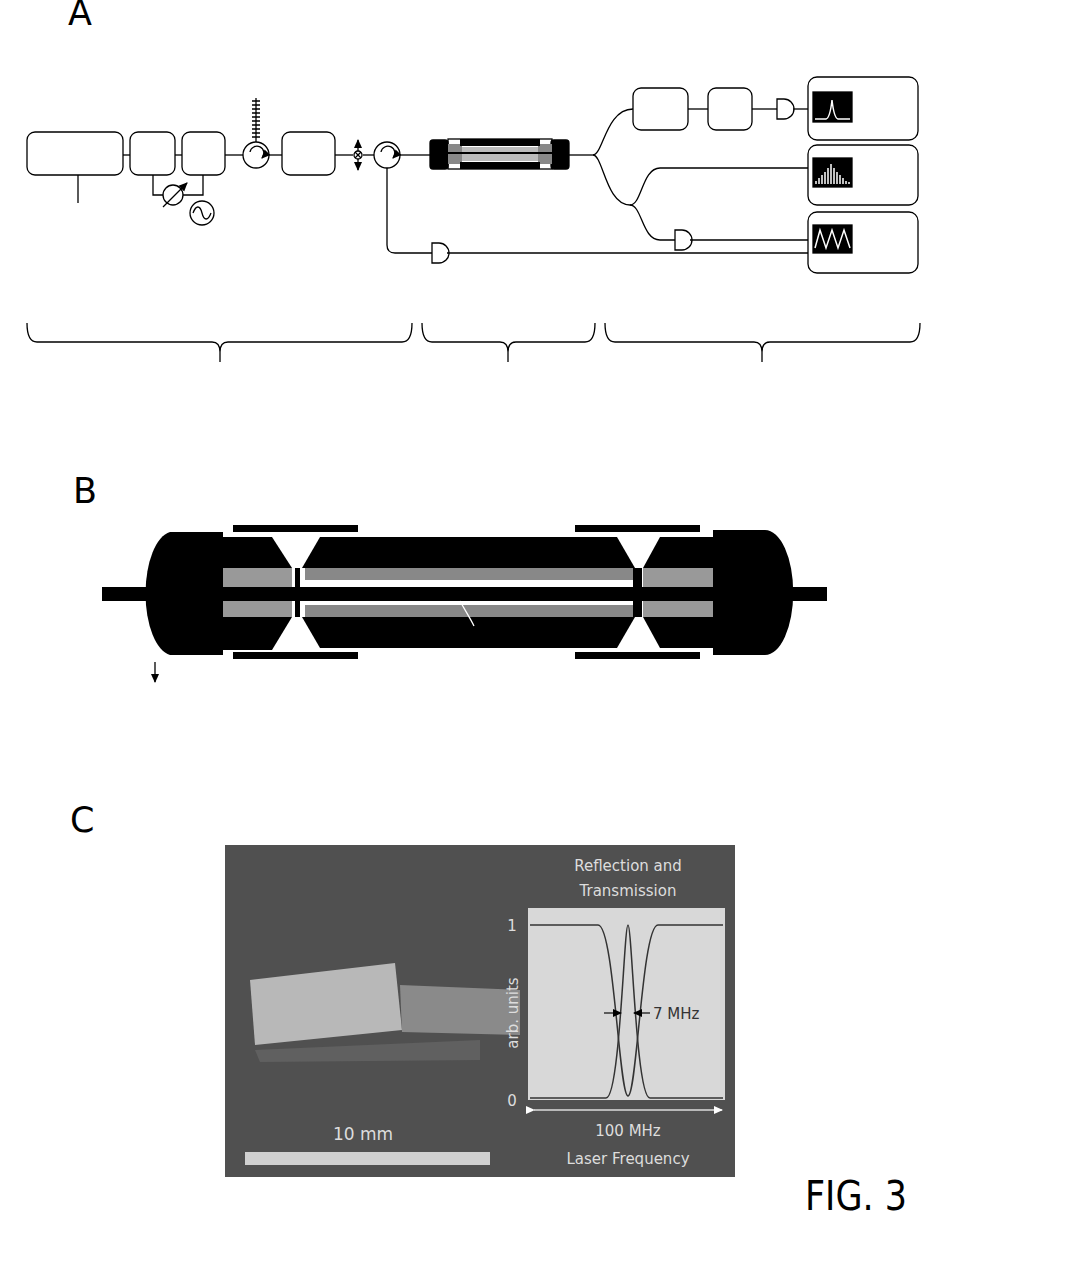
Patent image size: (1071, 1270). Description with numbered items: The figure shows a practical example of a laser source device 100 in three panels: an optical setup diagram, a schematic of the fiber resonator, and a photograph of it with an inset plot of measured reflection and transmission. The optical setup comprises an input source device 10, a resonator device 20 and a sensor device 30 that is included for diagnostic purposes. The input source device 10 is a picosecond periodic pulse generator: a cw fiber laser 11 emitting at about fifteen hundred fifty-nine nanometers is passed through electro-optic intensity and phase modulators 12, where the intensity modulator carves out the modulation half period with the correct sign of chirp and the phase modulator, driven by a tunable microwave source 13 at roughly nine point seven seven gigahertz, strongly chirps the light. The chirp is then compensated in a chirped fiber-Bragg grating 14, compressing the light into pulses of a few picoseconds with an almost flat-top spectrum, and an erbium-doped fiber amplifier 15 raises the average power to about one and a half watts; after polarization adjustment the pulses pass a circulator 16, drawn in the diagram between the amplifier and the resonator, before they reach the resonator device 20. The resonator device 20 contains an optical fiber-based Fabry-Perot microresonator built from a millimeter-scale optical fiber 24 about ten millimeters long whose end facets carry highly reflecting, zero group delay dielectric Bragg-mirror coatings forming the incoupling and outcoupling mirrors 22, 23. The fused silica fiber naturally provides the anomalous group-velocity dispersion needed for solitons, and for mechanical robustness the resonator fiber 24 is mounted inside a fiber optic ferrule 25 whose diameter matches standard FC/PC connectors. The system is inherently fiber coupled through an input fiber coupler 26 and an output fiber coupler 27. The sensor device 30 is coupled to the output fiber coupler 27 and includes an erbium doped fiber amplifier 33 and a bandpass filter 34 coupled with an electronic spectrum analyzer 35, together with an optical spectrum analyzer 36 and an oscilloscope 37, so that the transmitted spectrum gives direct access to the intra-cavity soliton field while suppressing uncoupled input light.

The laser source device 100 is at (147, 270).
The input source device 10 is at (231, 397).
The cw fiber laser 11 is at (80, 137).
The intensity and phase modulators 12 is at (177, 128).
The microwave source 13 is at (215, 215).
The chirped fiber-Bragg grating 14 is at (248, 113).
The erbium-doped fiber amplifier 15 is at (302, 172).
The optical circulator 16 is at (400, 148).
The resonator device 20 is at (521, 397).
The incoupling mirror 22 is at (298, 620).
The outcoupling mirror 23 is at (638, 620).
The optical fiber 24 is at (522, 648).
The fiber optic ferrule 25 is at (397, 650).
The input fiber coupler 26 is at (190, 658).
The output fiber coupler 27 is at (748, 655).
The sensor device 30 is at (776, 397).
The erbium doped fiber amplifier 33 is at (635, 90).
The bandpass filter 34 is at (718, 90).
The electronic spectrum analyzer 35 is at (813, 80).
The optical spectrum analyzer 36 is at (807, 188).
The oscilloscope 37 is at (825, 265).